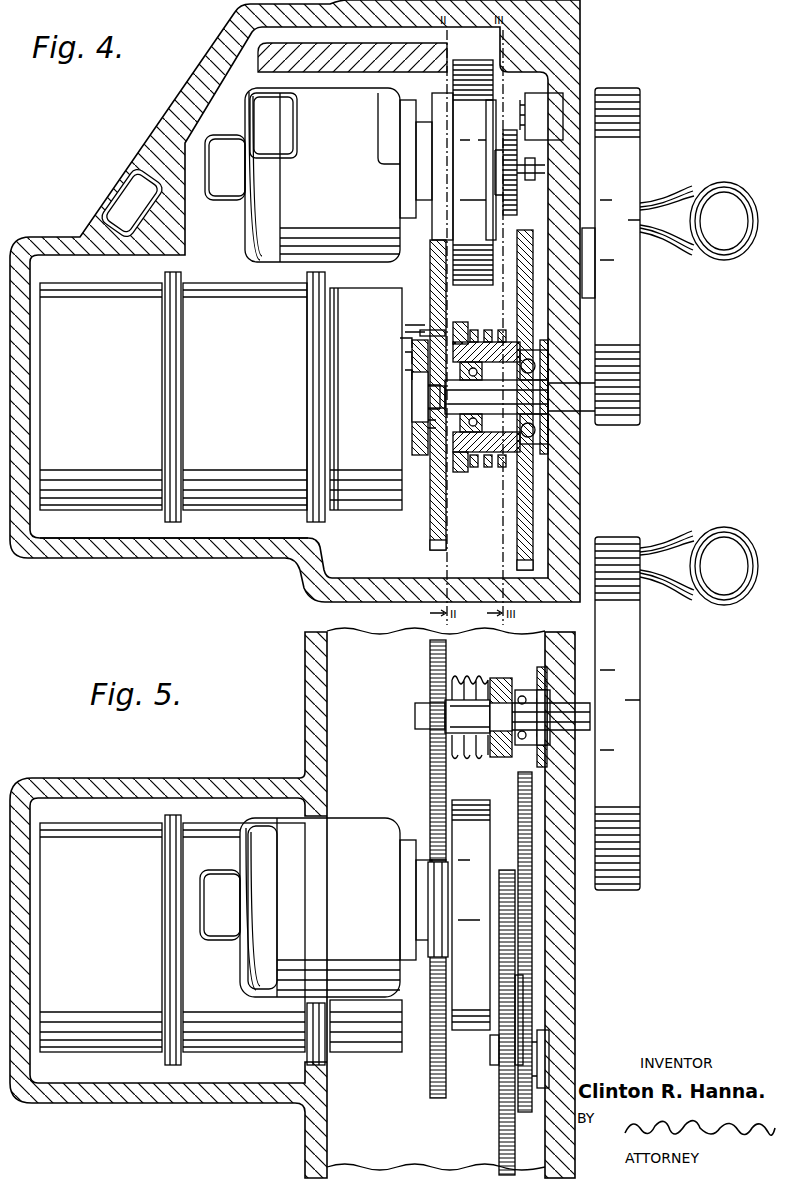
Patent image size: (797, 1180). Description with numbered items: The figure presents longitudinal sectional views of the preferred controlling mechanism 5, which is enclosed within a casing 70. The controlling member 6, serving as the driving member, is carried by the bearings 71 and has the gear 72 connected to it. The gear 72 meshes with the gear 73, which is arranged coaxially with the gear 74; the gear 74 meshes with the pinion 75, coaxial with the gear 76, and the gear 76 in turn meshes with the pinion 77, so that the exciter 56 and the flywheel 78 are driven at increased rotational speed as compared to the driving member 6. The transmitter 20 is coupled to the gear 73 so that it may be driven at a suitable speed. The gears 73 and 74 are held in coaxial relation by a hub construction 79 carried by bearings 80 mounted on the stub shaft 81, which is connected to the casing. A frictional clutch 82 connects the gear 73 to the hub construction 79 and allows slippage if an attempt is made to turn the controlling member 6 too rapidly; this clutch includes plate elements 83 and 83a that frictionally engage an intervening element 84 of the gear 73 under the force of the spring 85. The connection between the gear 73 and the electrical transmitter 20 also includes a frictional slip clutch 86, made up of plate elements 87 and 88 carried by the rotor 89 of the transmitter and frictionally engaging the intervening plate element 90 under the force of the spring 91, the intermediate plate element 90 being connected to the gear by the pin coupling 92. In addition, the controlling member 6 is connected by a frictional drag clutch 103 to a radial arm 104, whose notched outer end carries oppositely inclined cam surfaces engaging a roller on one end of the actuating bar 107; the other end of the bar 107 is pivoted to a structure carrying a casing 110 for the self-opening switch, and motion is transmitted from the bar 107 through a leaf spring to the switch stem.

In FIG. 4, the controlling mechanism 5 is at (196, 47).
In FIG. 4, the controlling member 6 is at (656, 206).
In FIG. 5, the controlling member 6 is at (588, 718).
In FIG. 4, the transmitter 20 is at (217, 298).
In FIG. 5, the transmitter 20 is at (88, 823).
In FIG. 4, the exciter 56 is at (371, 197).
In FIG. 5, the exciter 56 is at (360, 834).
In FIG. 4, the casing 70 is at (200, 560).
In FIG. 5, the casing 70 is at (305, 646).
In FIG. 5, the bearings 71 is at (520, 700).
In FIG. 5, the gear 72 is at (430, 660).
In FIG. 4, the gear 73 is at (430, 533).
In FIG. 5, the gear 73 is at (432, 812).
In FIG. 4, the gear 74 is at (522, 540).
In FIG. 5, the gear 74 is at (520, 802).
In FIG. 5, the pinion 75 is at (540, 1068).
In FIG. 5, the gear 76 is at (498, 1040).
In FIG. 4, the pinion 77 is at (510, 163).
In FIG. 5, the pinion 77 is at (507, 870).
In FIG. 4, the flywheel 78 is at (478, 90).
In FIG. 5, the flywheel 78 is at (465, 814).
In FIG. 4, the hub construction 79 is at (538, 345).
In FIG. 4, the bearings 80 is at (530, 366).
In FIG. 4, the stub shaft 81 is at (522, 400).
In FIG. 4, the frictional clutch 82 is at (456, 476).
In FIG. 4, the plate element 83 is at (486, 332).
In FIG. 4, the plate element 83a is at (435, 334).
In FIG. 4, the intervening element 84 is at (456, 324).
In FIG. 4, the spring 85 is at (480, 468).
In FIG. 4, the frictional slip clutch 86 is at (420, 460).
In FIG. 4, the plate element 87 is at (412, 345).
In FIG. 4, the plate element 88 is at (412, 376).
In FIG. 4, the rotor 89 is at (413, 406).
In FIG. 4, the intervening plate element 90 is at (410, 361).
In FIG. 4, the spring 91 is at (416, 429).
In FIG. 4, the pin coupling 92 is at (418, 328).
In FIG. 5, the frictional drag clutch 103 is at (495, 692).
In FIG. 4, the radial arm 104 is at (500, 218).
In FIG. 5, the radial arm 104 is at (500, 680).
In FIG. 4, the actuating bar 107 is at (535, 174).
In FIG. 4, the casing 110 is at (547, 95).